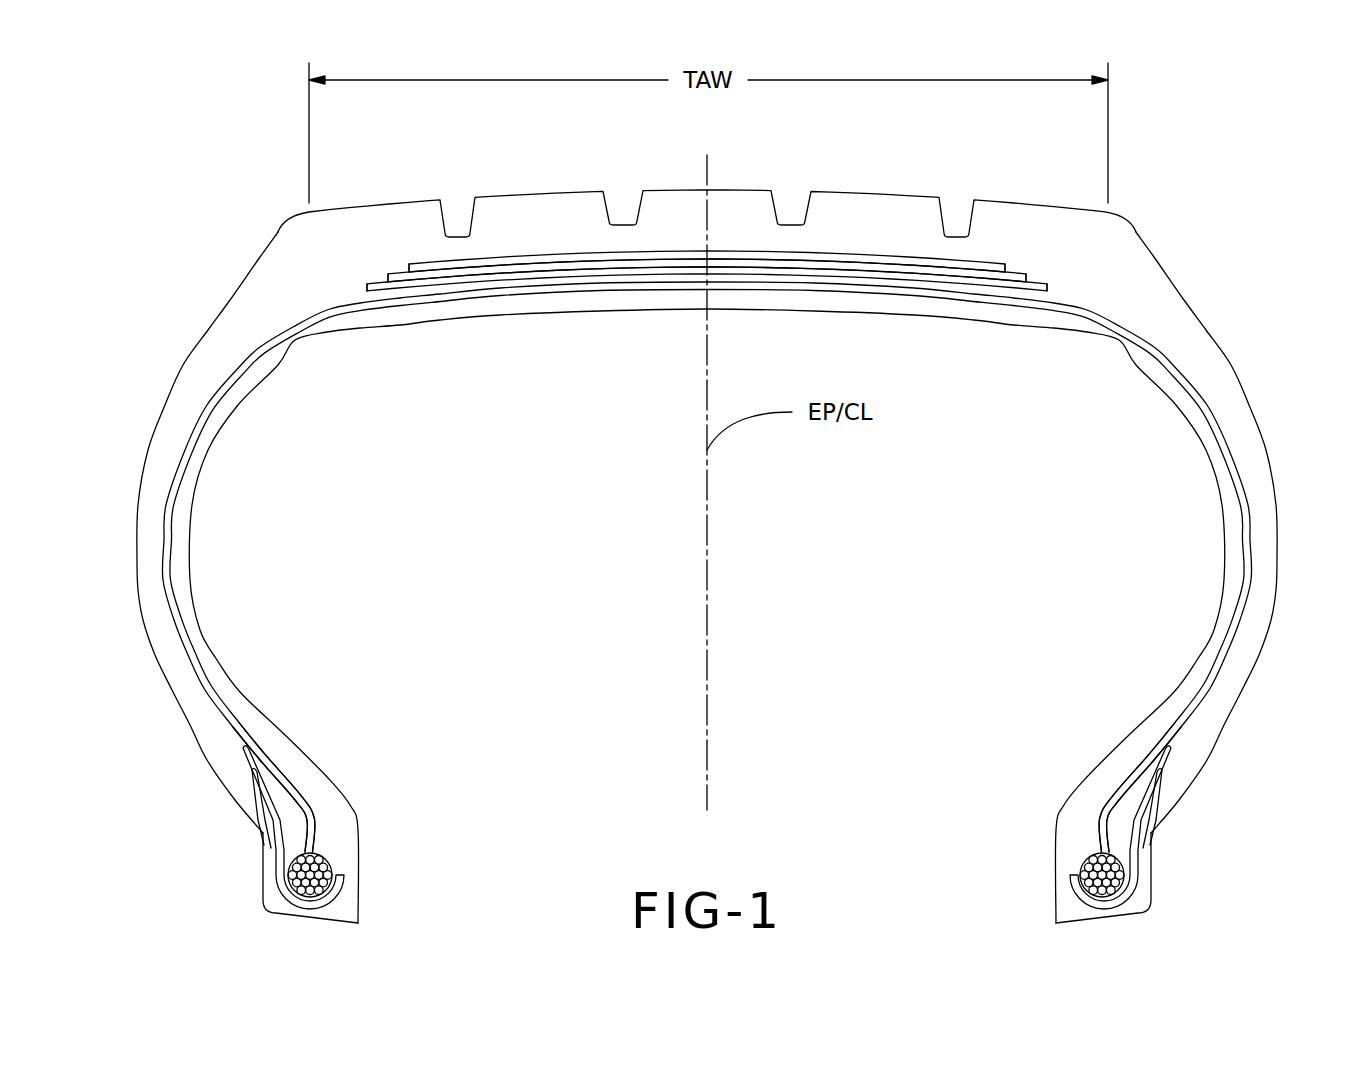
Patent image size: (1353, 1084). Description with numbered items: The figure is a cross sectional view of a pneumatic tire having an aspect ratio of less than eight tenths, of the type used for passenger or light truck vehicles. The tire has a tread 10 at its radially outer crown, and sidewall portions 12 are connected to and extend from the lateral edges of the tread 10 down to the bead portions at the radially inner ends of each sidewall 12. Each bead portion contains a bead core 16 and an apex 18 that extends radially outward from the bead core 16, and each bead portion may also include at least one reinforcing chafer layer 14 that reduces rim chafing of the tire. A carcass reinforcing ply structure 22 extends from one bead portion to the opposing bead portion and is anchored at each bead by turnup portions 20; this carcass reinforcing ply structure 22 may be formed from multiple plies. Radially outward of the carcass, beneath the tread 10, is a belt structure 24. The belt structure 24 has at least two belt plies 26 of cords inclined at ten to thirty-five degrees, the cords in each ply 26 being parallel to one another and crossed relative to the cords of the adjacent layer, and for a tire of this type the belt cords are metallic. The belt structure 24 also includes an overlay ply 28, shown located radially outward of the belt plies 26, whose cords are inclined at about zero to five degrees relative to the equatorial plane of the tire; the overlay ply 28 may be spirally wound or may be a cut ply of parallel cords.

The tread 10 is at (375, 207).
The sidewall portion 12 is at (1228, 692).
The reinforcing chafer layer 14 is at (273, 818).
The bead core 16 is at (312, 868).
The apex 18 is at (290, 802).
The turnup portion 20 is at (1168, 760).
The carcass reinforcing ply structure 22 is at (181, 466).
The belt structure 24 is at (521, 234).
The belt ply 26 is at (1043, 284).
The overlay ply 28 is at (848, 257).